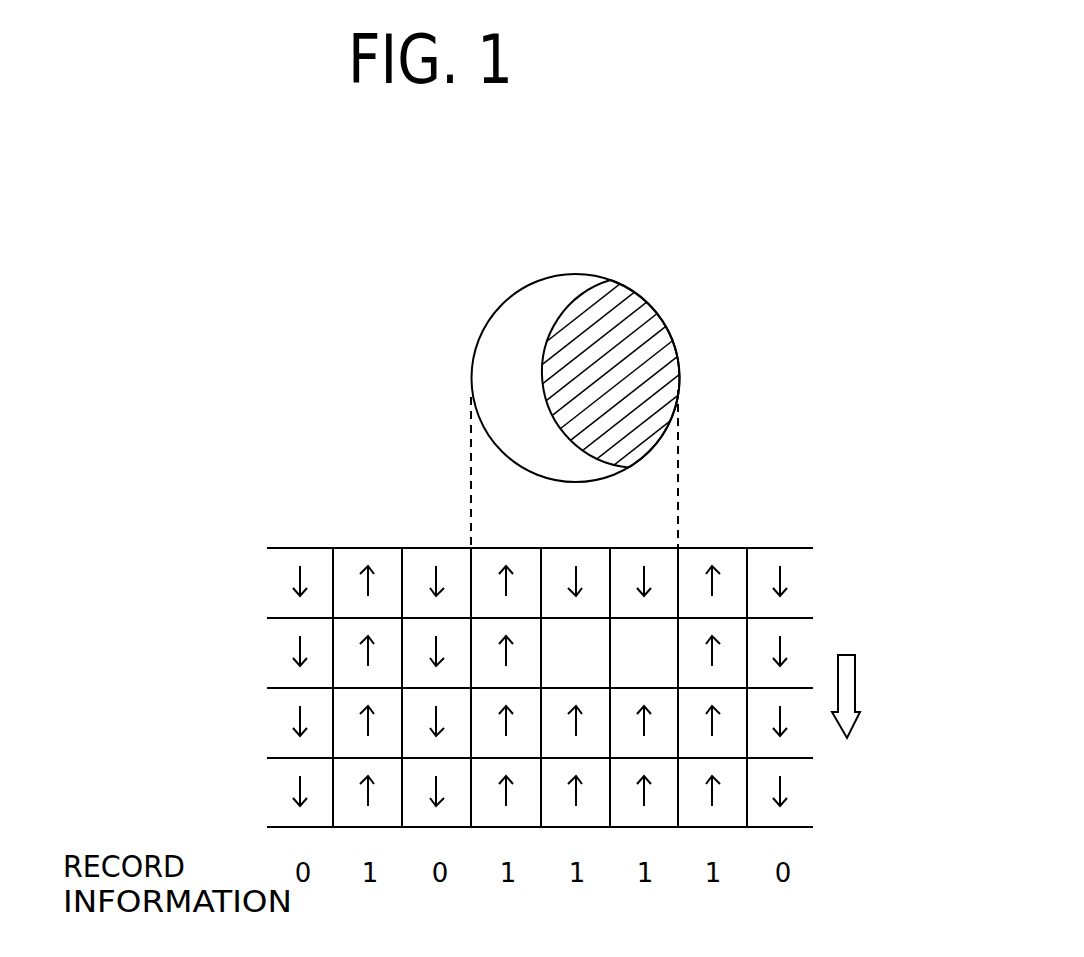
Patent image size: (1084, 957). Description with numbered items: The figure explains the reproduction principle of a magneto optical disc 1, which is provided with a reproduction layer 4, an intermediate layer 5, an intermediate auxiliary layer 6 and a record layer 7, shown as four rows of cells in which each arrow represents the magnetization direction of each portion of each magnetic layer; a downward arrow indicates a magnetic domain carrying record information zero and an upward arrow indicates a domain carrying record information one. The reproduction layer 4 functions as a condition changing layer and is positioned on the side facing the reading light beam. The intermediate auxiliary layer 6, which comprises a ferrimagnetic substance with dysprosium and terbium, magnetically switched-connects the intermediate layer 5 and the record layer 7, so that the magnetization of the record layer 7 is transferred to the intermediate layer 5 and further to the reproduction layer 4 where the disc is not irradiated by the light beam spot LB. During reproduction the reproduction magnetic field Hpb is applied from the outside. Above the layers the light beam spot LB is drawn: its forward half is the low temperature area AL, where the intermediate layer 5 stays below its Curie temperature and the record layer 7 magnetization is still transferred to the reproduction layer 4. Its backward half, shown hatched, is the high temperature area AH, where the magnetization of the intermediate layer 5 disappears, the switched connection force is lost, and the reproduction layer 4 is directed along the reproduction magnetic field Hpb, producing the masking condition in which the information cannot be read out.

The magneto optical disc 1 is at (591, 687).
The reproduction layer 4 is at (263, 551).
The intermediate layer 5 is at (263, 621).
The intermediate auxiliary layer 6 is at (263, 691).
The record layer 7 is at (263, 761).
The low temperature area AL is at (597, 278).
The high temperature area AH is at (658, 332).
The light beam spot LB is at (600, 390).
The reproduction magnetic field Hpb is at (869, 696).